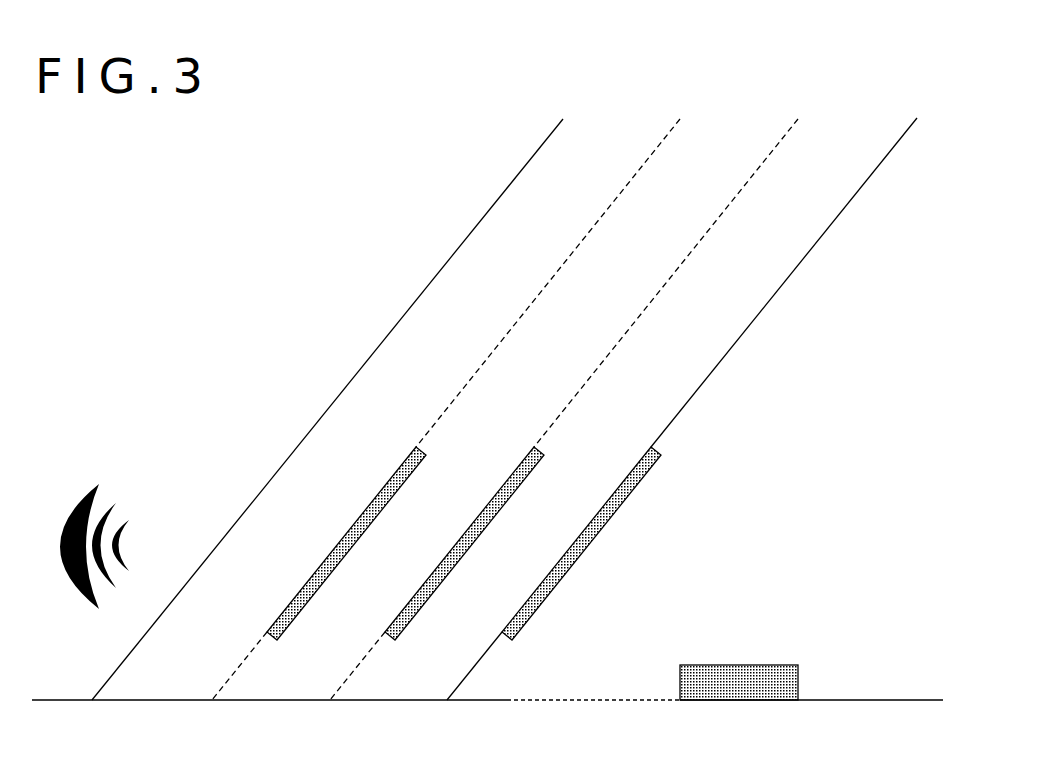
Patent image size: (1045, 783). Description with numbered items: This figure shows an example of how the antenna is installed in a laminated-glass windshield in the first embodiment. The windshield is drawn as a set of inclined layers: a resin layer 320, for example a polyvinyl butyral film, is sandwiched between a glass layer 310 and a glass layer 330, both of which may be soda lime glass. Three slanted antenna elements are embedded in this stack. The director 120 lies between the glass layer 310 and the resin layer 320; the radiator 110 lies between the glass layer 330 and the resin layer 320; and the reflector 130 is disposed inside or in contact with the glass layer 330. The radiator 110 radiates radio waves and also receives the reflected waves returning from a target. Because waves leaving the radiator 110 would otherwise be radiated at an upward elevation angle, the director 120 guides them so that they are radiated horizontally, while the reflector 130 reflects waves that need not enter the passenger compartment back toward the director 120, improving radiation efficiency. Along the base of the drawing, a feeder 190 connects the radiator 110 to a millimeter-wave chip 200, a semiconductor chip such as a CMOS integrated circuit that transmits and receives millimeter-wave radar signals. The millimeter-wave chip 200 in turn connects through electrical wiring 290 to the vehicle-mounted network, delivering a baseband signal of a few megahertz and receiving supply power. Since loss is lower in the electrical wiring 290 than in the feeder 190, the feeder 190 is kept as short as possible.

The radiator 110 is at (473, 548).
The director 120 is at (345, 562).
The reflector 130 is at (592, 548).
The feeder 190 is at (560, 701).
The millimeter-wave chip 200 is at (740, 665).
The electrical wiring 290 is at (857, 701).
The glass layer 310 is at (434, 286).
The resin layer 320 is at (642, 300).
The glass layer 330 is at (753, 300).